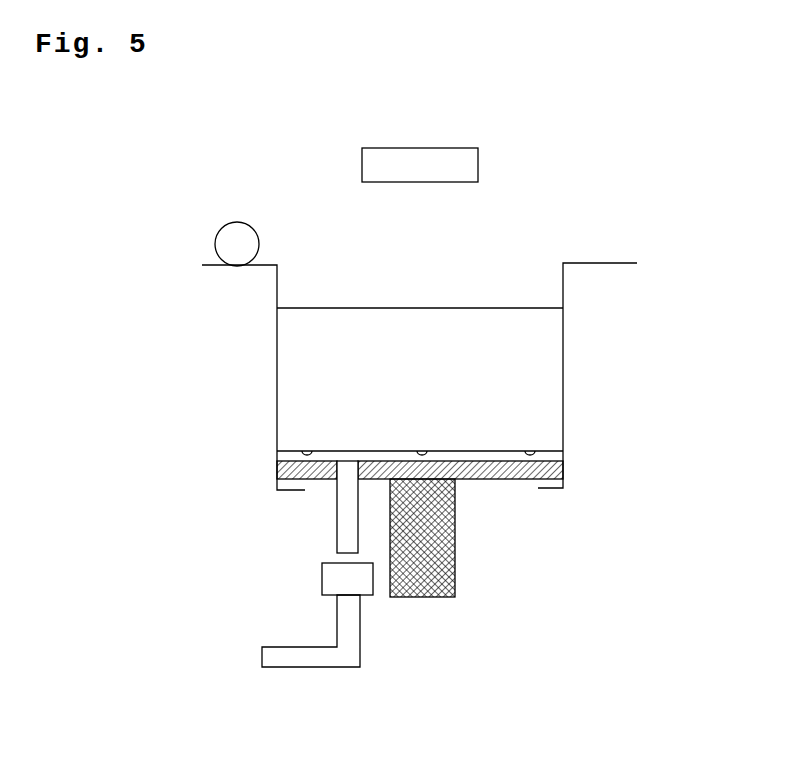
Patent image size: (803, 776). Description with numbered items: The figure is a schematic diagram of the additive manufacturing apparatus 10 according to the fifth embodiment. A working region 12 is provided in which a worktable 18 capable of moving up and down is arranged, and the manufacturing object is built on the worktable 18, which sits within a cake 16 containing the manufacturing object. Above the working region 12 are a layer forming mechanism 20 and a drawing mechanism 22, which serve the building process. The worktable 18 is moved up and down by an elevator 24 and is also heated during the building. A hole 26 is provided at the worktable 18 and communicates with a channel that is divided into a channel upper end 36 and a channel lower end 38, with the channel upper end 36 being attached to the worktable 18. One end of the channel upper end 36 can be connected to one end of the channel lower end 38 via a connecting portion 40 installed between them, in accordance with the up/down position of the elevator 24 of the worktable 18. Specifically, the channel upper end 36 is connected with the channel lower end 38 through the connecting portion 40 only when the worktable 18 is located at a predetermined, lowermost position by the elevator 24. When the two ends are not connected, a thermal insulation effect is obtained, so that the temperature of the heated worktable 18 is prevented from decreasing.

The additive manufacturing apparatus 10 is at (557, 212).
The working region 12 is at (563, 295).
The cake containing a manufacturing object 16 is at (522, 383).
The worktable 18 is at (563, 475).
The layer forming mechanism 20 is at (240, 220).
The drawing mechanism 22 is at (478, 163).
The elevator 24 is at (455, 547).
The hole 26 is at (308, 455).
The channel upper end 36 is at (335, 505).
The channel lower end 38 is at (293, 643).
The connecting portion 40 is at (368, 597).